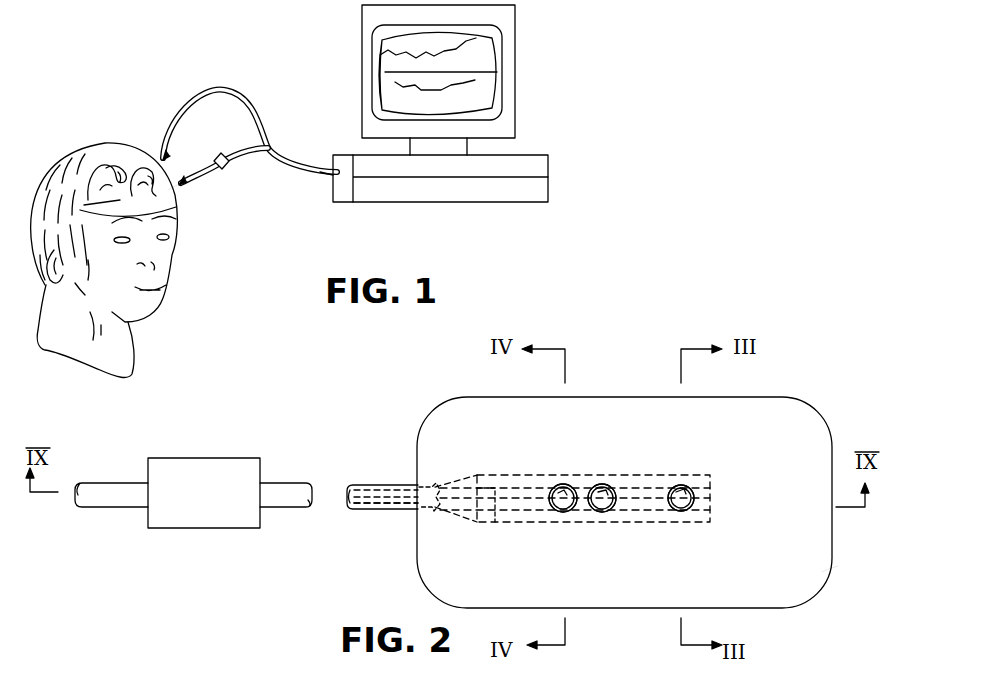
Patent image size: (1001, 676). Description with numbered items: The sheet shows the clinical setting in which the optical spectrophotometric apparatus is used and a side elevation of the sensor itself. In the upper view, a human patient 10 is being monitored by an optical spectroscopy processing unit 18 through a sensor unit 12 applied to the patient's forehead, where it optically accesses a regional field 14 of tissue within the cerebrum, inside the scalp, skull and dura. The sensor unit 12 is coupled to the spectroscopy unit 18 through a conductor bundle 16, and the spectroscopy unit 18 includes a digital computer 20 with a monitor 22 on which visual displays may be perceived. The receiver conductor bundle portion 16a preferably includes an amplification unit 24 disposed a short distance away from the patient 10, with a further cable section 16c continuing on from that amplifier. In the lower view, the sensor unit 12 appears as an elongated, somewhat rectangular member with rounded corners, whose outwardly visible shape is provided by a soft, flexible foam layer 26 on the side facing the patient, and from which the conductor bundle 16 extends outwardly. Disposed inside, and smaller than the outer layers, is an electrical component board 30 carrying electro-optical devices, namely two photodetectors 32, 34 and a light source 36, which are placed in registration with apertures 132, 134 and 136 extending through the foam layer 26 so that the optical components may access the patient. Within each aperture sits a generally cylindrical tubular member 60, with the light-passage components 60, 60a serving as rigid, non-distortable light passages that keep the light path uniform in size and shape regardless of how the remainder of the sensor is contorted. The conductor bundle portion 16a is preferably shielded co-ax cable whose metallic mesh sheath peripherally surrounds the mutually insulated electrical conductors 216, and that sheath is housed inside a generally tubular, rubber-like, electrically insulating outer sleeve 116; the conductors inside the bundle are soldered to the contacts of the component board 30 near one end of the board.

In FIG. 1, the patient 10 is at (68, 152).
In FIG. 2, the sensor unit 12 is at (612, 394).
In FIG. 1, the regional field 14 is at (133, 156).
In FIG. 1, the conductor bundle 16 is at (303, 156).
In FIG. 2, the conductor bundle 16 is at (399, 487).
In FIG. 1, the receiver conductor bundle portion 16a is at (200, 174).
In FIG. 2, the receiver conductor bundle portion 16a is at (305, 468).
In FIG. 2, the cable section 16c is at (120, 487).
In FIG. 1, the optical spectroscopy processing unit 18 is at (320, 66).
In FIG. 1, the digital computer 20 is at (543, 172).
In FIG. 1, the monitor 22 is at (487, 60).
In FIG. 1, the amplification unit 24 is at (230, 164).
In FIG. 2, the amplification unit 24 is at (222, 506).
In FIG. 2, the foam layer 26 is at (822, 572).
In FIG. 2, the electrical component board 30 is at (498, 524).
In FIG. 2, the photodetector 32 is at (690, 498).
In FIG. 2, the photodetector 34 is at (604, 502).
In FIG. 2, the light source 36 is at (560, 492).
In FIG. 2, the tubular member 60 is at (603, 513).
In FIG. 2, the light-passage component 60a is at (565, 513).
In FIG. 2, the outer sleeve 116 is at (366, 510).
In FIG. 2, the aperture 132 is at (680, 491).
In FIG. 2, the aperture 134 is at (607, 491).
In FIG. 2, the aperture 136 is at (567, 492).
In FIG. 2, the electrical conductors 216 is at (455, 522).